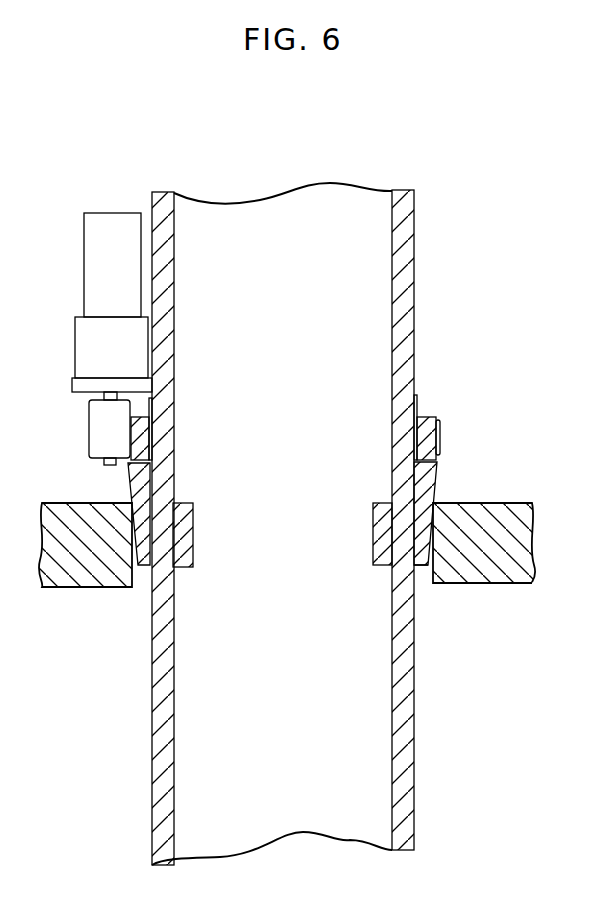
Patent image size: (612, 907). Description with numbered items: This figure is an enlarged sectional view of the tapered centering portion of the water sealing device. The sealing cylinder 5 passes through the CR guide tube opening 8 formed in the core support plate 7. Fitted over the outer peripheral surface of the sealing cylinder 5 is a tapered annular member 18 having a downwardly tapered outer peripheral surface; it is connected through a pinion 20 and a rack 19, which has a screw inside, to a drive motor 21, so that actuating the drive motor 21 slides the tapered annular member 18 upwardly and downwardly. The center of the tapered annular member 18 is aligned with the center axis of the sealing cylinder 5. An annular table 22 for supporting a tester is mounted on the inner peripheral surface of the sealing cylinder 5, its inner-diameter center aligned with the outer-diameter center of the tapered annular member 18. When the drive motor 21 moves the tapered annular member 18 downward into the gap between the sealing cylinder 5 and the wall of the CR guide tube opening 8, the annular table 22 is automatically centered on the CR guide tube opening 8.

The sealing cylinder 5 is at (414, 283).
The core support plate 7 is at (487, 587).
The CR guide tube opening 8 is at (424, 577).
The tapered annular member 18 is at (437, 472).
The rack 19 is at (430, 418).
The pinion 20 is at (89, 432).
The drive motor 21 is at (84, 270).
The annular table 22 is at (373, 538).